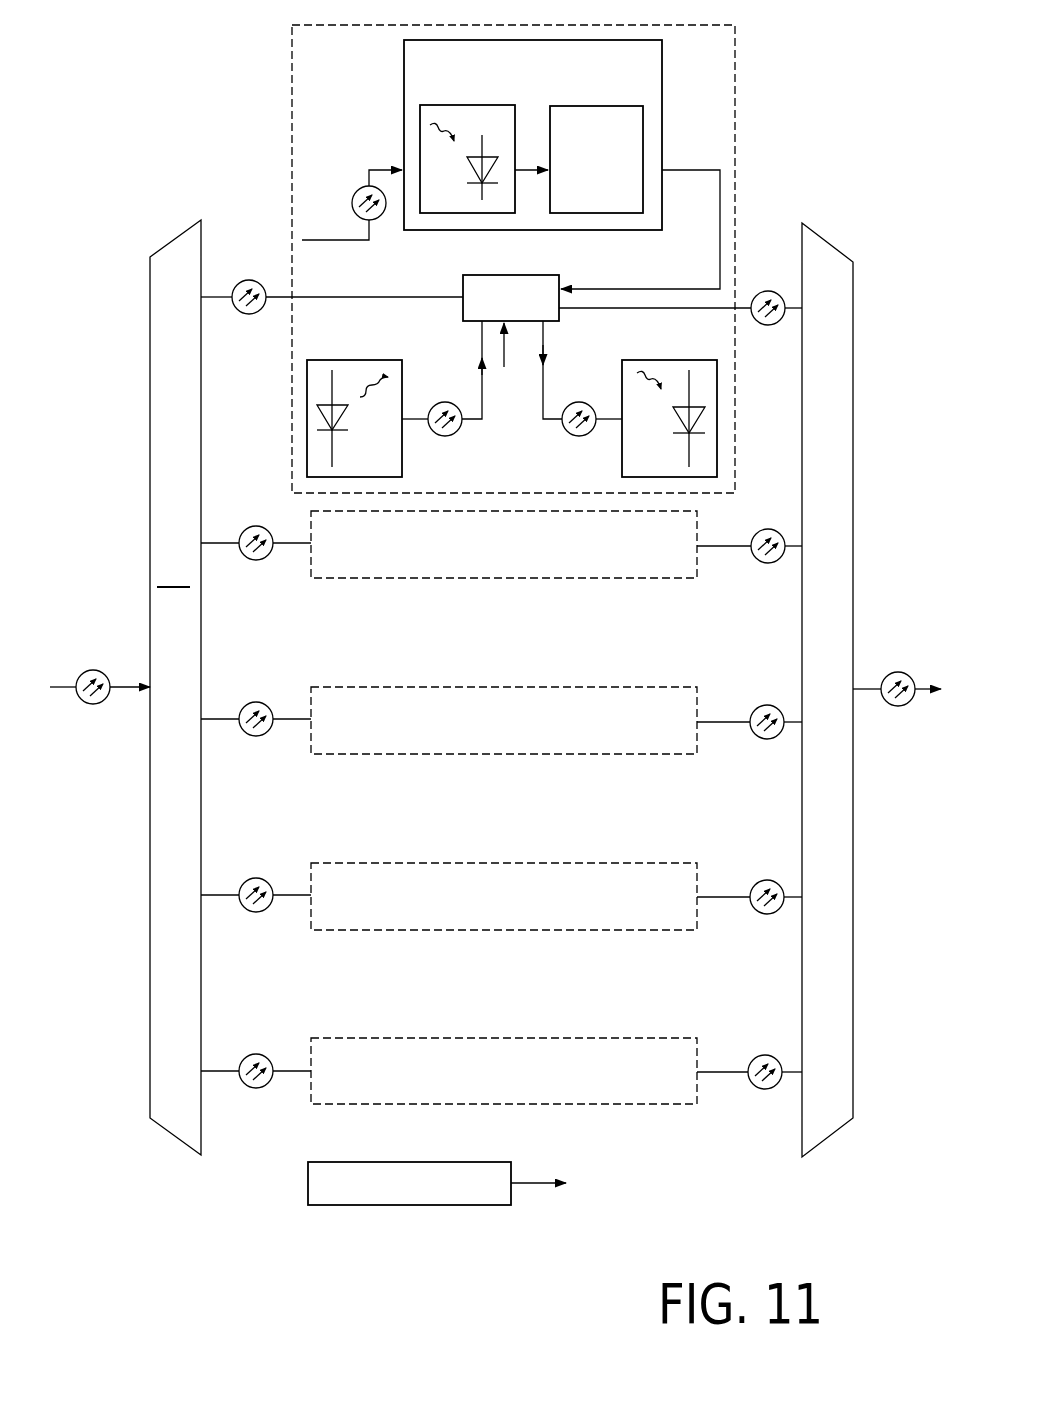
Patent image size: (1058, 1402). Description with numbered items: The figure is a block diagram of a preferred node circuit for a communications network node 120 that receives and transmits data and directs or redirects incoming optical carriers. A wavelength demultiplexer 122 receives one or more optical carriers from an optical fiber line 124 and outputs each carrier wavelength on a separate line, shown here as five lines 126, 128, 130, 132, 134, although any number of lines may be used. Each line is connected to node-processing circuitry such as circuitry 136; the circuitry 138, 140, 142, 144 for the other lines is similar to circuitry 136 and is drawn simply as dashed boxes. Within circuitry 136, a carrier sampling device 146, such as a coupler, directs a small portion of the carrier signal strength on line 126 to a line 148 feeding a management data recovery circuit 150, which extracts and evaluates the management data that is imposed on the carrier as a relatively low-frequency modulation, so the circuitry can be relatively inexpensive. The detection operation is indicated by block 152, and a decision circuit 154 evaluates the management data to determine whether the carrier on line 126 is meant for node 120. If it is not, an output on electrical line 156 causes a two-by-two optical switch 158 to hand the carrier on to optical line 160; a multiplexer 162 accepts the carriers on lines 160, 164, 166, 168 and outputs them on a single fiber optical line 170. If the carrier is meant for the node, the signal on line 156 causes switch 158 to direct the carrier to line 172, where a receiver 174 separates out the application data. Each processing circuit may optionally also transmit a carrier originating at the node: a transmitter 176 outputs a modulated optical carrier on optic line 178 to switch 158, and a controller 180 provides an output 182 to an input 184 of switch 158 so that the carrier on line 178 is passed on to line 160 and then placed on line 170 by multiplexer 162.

The node 120 is at (877, 146).
The wavelength demultiplexer 122 is at (150, 415).
The optical fiber line 124 is at (60, 687).
The line 126 is at (216, 297).
The line 128 is at (220, 543).
The line 130 is at (222, 719).
The line 132 is at (222, 895).
The line 134 is at (222, 1071).
The node-processing circuitry 136 is at (292, 145).
The circuitry 138 is at (605, 578).
The circuitry 140 is at (605, 754).
The circuitry 142 is at (605, 930).
The circuitry 144 is at (603, 1104).
The carrier sampling device 146 is at (332, 228).
The line 148 is at (372, 165).
The management data recovery circuit 150 is at (404, 135).
The detection block 152 is at (500, 105).
The decision circuit 154 is at (632, 105).
The electrical line 156 is at (695, 170).
The optical switch 158 is at (483, 275).
The optical line 160 is at (745, 308).
The multiplexer 162 is at (855, 418).
The line 164 is at (742, 722).
The line 166 is at (742, 897).
The line 168 is at (742, 1072).
The fiber optical line 170 is at (870, 689).
The line 172 is at (548, 419).
The receiver 174 is at (700, 360).
The transmitter 176 is at (392, 360).
The optic line 178 is at (470, 419).
The controller 180 is at (380, 1205).
The output 182 is at (530, 1187).
The input 184 is at (504, 367).